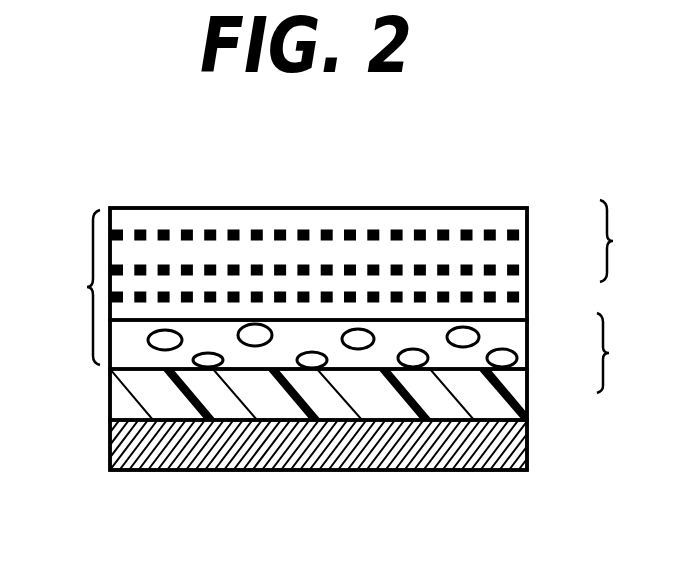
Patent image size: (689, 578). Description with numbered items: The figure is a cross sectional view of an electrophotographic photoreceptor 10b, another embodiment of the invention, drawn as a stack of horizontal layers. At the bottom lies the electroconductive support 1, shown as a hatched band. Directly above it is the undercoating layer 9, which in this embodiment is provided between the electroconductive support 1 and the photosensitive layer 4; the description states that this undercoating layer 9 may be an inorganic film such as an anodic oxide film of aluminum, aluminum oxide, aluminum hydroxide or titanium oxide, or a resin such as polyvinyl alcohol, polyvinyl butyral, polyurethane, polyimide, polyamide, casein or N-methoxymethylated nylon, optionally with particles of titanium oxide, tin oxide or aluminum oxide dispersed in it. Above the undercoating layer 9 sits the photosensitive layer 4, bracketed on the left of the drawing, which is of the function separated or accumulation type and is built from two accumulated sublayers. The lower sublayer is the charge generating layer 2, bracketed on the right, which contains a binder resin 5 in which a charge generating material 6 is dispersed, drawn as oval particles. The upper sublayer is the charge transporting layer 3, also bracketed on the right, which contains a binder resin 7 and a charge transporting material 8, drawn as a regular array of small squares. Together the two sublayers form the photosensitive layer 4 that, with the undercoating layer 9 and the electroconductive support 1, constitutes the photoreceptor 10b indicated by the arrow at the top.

The electrophotographic photoreceptor 10b is at (475, 198).
The electroconductive support 1 is at (473, 472).
The undercoating layer 9 is at (515, 400).
The charge generating layer 2 is at (618, 353).
The binder resin 5 is at (528, 367).
The charge generating material 6 is at (513, 355).
The charge transporting layer 3 is at (627, 241).
The binder resin 7 is at (517, 223).
The charge transporting material 8 is at (517, 270).
The photosensitive layer 4 is at (64, 287).